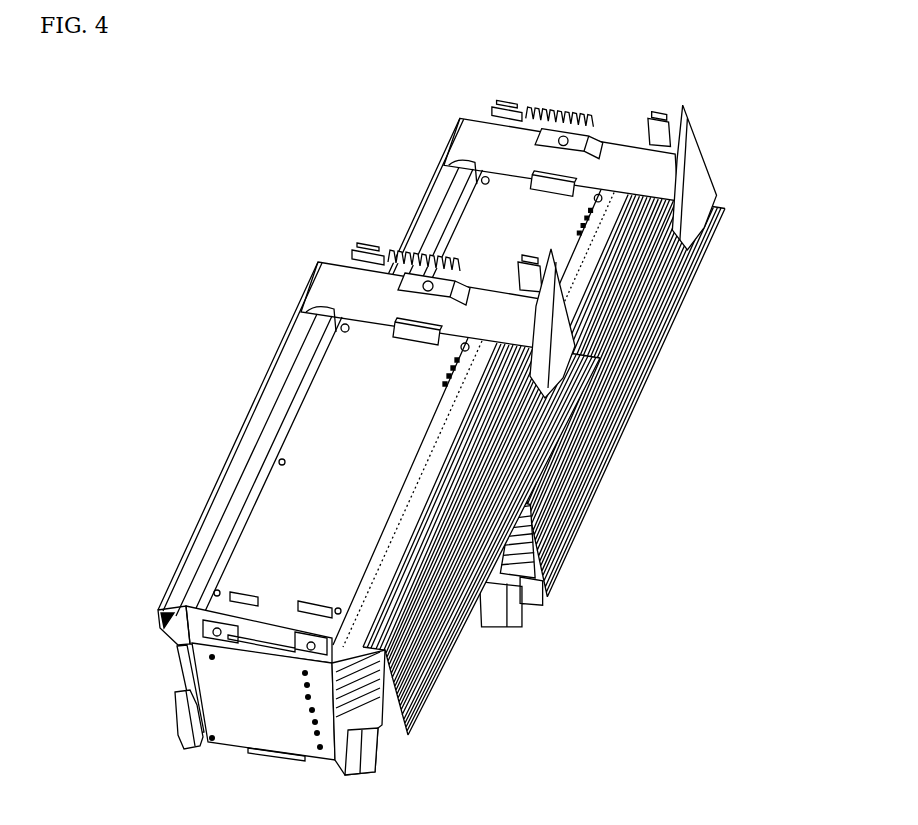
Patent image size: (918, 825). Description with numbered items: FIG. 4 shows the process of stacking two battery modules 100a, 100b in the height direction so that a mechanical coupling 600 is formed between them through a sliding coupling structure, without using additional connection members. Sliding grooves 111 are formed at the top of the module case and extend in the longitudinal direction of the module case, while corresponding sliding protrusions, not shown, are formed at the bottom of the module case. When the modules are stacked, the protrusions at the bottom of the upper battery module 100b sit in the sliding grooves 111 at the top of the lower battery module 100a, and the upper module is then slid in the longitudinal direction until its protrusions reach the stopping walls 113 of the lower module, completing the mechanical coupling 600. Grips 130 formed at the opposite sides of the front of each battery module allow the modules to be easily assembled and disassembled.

The mechanical coupling 600 is at (78, 141).
The battery module 100a is at (652, 348).
The battery module 100b is at (176, 570).
The sliding grooves 111 is at (245, 476).
The stopping walls 113 is at (721, 177).
The grips 130 is at (565, 622).